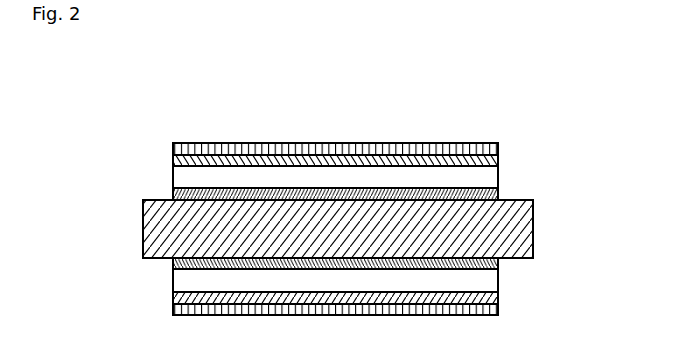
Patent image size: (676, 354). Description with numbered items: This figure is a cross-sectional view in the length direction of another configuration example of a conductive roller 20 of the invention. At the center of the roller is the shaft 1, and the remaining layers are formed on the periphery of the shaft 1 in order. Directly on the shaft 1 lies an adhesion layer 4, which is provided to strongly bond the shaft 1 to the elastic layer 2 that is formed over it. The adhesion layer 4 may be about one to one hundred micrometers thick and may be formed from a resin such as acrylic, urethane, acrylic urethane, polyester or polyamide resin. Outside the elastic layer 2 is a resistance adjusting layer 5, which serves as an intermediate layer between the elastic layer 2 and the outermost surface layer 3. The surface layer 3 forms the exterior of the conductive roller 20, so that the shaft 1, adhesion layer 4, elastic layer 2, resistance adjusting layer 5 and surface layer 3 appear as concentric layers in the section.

The conductive roller 20 is at (178, 107).
The shaft 1 is at (533, 222).
The elastic layer 2 is at (499, 175).
The surface layer 3 is at (391, 143).
The adhesion layer 4 is at (499, 192).
The resistance adjusting layer 5 is at (499, 157).